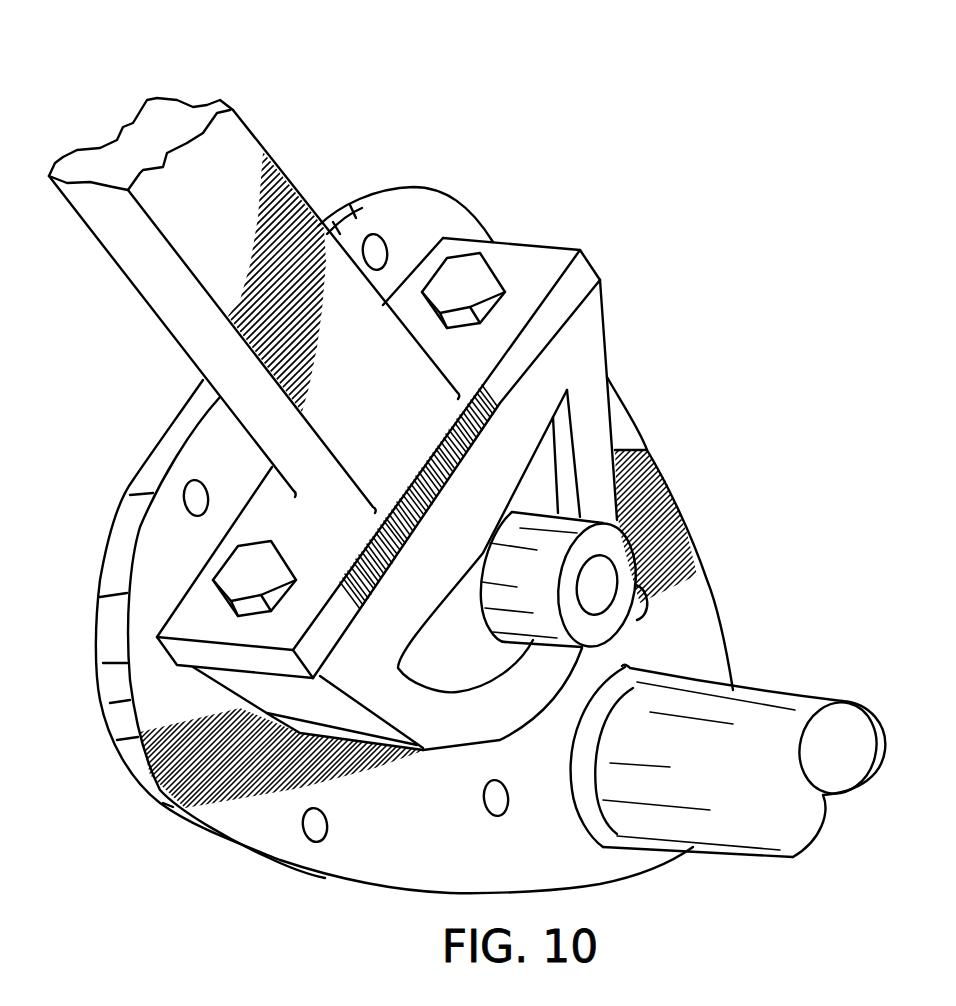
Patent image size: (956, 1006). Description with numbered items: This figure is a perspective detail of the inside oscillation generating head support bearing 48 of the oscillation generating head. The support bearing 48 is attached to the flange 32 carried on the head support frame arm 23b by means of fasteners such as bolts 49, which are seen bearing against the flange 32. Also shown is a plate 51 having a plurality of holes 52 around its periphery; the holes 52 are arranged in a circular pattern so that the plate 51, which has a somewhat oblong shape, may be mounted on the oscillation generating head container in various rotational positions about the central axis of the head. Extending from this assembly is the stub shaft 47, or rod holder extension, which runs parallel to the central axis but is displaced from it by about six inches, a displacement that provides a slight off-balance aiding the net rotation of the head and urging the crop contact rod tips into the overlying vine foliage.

The head support frame arm 23b is at (252, 137).
The flange 32 is at (460, 238).
The stub shaft 47 is at (788, 692).
The inside oscillation generating head support bearing 48 is at (648, 450).
The bolts 49 is at (482, 271).
The plate 51 is at (618, 413).
The holes 52 is at (377, 236).